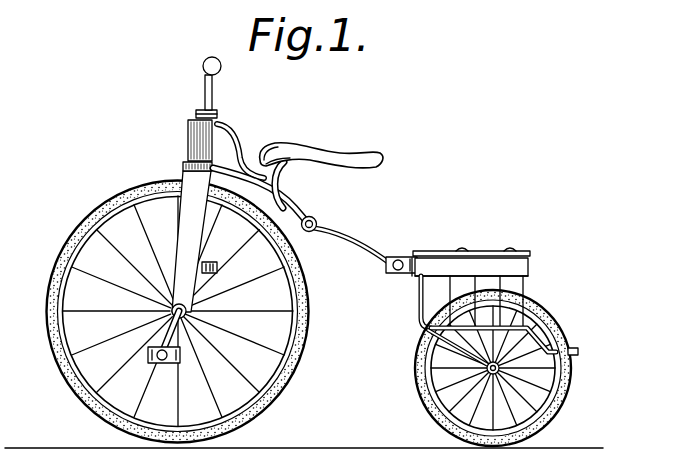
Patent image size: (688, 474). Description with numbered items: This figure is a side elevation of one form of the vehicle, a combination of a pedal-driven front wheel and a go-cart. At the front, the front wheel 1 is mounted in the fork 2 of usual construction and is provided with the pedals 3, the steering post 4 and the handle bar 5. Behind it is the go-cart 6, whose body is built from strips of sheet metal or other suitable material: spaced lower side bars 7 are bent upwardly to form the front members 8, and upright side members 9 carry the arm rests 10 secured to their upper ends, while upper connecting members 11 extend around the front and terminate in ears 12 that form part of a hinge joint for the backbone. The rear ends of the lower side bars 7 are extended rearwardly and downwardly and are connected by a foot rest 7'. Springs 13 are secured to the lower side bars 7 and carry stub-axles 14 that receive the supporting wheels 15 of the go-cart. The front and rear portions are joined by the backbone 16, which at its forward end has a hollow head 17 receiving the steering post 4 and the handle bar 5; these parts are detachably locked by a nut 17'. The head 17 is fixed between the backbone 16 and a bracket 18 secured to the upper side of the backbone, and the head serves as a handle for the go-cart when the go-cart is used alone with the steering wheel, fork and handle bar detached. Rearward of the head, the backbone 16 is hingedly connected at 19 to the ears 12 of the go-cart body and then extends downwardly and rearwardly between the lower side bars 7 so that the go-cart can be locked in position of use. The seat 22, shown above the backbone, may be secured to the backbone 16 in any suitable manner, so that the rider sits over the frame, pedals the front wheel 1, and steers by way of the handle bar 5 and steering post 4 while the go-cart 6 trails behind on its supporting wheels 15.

The front wheel 1 is at (306, 316).
The fork 2 is at (191, 244).
The pedals 3 is at (208, 261).
The steering post 4 is at (184, 165).
The handle bar 5 is at (214, 86).
The go-cart 6 is at (488, 256).
The side bars 7 is at (514, 322).
The foot rest 7' is at (593, 337).
The front members 8 is at (418, 308).
The upright side members 9 is at (515, 282).
The arm rests 10 is at (488, 251).
The upper connecting members 11 is at (438, 266).
The ears 12 is at (412, 276).
The springs 13 is at (433, 362).
The stub-axles 14 is at (501, 369).
The supporting wheels 15 is at (568, 408).
The backbone 16 is at (293, 210).
The hollow head 17 is at (178, 140).
The nut 17' is at (179, 99).
The bracket 18 is at (237, 143).
The hinge connection 19 is at (392, 256).
The seat 22 is at (313, 153).